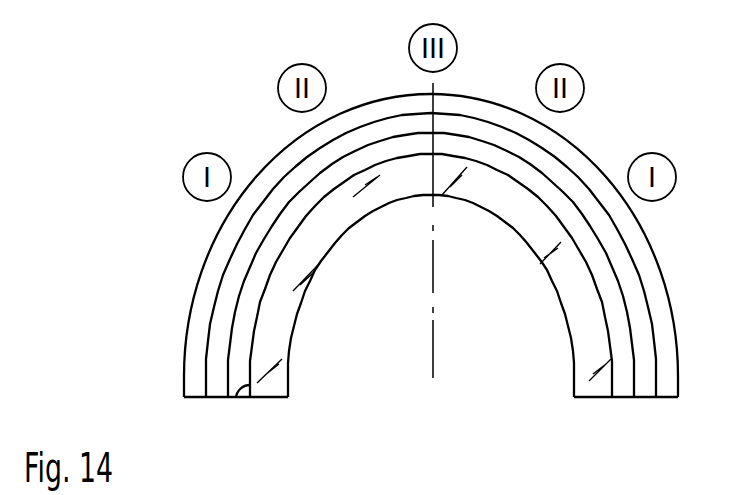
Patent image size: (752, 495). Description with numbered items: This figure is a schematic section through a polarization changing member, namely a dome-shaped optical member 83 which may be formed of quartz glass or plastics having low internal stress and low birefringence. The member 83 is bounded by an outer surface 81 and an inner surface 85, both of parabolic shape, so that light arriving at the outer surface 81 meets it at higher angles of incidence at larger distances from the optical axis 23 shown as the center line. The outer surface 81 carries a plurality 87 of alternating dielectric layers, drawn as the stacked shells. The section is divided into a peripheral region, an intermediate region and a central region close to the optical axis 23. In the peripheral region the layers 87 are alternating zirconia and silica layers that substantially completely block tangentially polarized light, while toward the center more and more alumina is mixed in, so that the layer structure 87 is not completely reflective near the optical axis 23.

The optical axis 23 is at (433, 358).
The surface 81 is at (236, 396).
The dome-shaped optical member 83 is at (272, 398).
The surface 85 is at (298, 328).
The plurality of alternating dielectric layers 87 is at (678, 403).